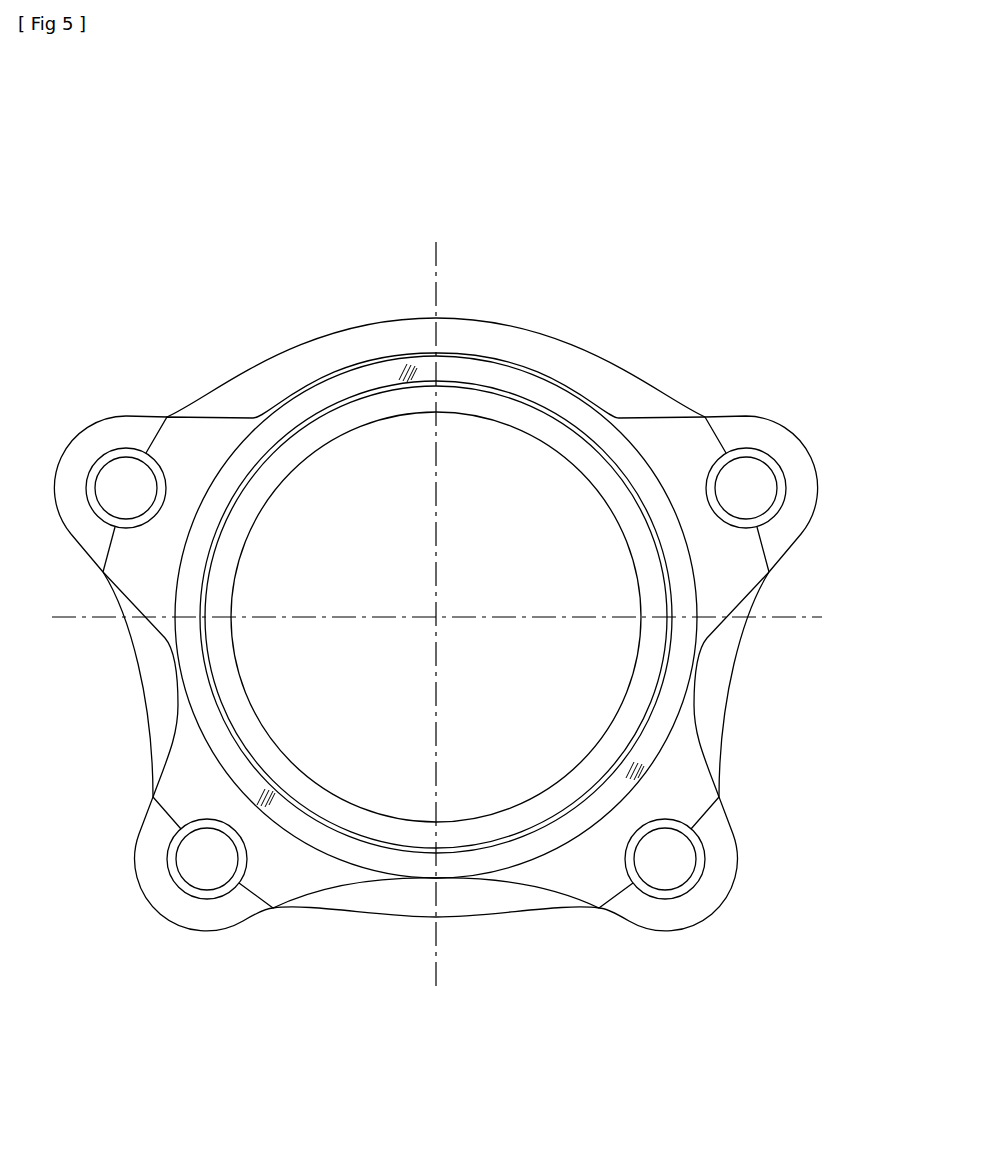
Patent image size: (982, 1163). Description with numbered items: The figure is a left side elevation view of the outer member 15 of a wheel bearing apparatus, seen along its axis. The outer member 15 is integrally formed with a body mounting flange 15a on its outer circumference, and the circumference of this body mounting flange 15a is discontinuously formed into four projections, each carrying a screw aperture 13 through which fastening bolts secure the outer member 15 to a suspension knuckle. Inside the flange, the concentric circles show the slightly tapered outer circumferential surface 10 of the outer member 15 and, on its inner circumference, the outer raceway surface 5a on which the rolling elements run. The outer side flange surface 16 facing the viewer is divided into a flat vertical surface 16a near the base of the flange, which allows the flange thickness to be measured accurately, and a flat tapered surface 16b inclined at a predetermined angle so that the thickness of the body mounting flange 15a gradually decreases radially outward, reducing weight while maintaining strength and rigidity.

The outer member 15 is at (381, 328).
The body mounting flange 15a is at (108, 431).
The outer side flange surface 16 is at (142, 323).
The flat vertical surface 16a is at (182, 440).
The flat tapered surface 16b is at (121, 437).
The outer raceway surface 5a is at (470, 397).
The outer circumferential surface 10 is at (225, 463).
The screw aperture 13 is at (150, 476).